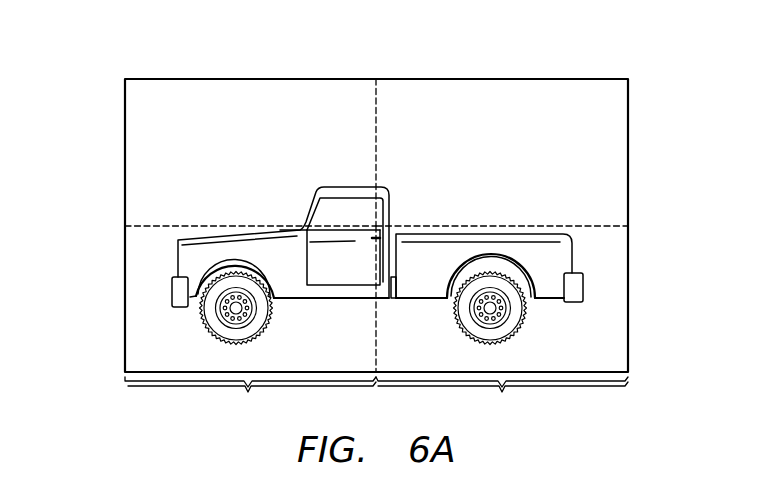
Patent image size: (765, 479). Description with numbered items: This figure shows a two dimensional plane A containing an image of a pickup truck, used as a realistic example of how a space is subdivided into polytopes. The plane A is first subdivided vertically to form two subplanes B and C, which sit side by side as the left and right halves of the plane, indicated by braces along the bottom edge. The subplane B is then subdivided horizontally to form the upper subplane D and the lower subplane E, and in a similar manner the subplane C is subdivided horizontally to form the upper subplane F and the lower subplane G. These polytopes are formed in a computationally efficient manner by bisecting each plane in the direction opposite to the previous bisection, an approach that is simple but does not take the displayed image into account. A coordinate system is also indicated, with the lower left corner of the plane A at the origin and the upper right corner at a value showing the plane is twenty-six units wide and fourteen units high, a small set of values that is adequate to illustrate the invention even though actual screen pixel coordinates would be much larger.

The two dimensional plane A is at (648, 143).
The subplane B is at (250, 399).
The subplane C is at (502, 399).
The subplane D is at (250, 152).
The subplane E is at (348, 299).
The subplane F is at (502, 173).
The subplane G is at (422, 345).